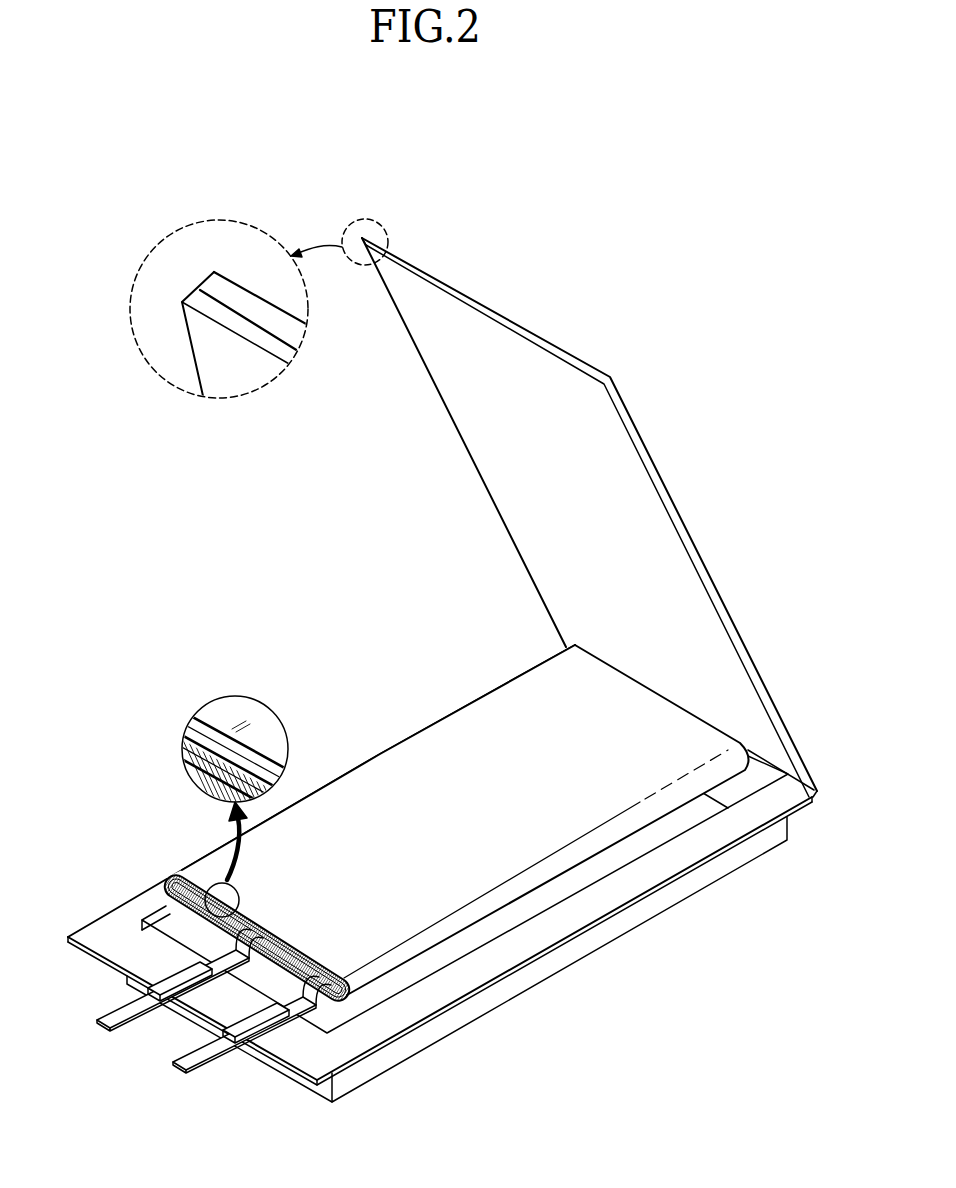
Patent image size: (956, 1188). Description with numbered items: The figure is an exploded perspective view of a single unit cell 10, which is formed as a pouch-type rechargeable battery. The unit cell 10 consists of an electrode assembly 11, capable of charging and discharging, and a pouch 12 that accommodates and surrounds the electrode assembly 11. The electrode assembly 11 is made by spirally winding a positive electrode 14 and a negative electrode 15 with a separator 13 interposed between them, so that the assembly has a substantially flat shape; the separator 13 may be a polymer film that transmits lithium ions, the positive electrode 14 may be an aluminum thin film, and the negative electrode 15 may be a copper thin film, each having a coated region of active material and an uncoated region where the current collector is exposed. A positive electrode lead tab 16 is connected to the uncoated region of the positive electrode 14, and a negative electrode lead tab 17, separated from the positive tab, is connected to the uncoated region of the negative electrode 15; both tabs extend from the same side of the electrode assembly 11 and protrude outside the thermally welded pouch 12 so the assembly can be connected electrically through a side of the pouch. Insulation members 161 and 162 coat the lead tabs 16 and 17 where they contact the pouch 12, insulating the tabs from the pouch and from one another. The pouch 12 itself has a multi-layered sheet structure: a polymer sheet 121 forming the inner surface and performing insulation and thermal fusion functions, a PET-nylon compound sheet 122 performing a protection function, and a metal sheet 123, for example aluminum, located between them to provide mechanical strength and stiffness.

The unit cell 10 is at (270, 509).
The electrode assembly 11 is at (162, 843).
The pouch 12 is at (512, 500).
The polymer sheet 121 is at (212, 312).
The PET-nylon compound sheet 122 is at (263, 307).
The metal sheet 123 is at (237, 310).
The separator 13 is at (233, 751).
The positive electrode 14 is at (192, 740).
The negative electrode 15 is at (195, 715).
The positive electrode lead tab 16 is at (120, 1012).
The insulation member 161 is at (170, 980).
The negative electrode lead tab 17 is at (192, 1065).
The insulation member 162 is at (263, 1022).